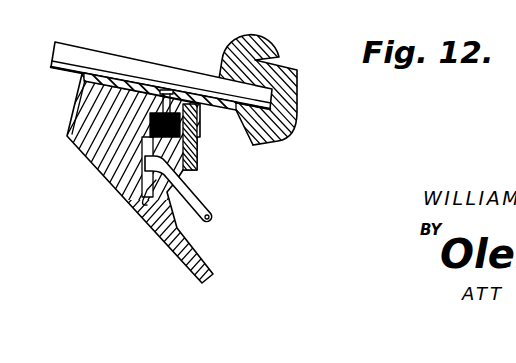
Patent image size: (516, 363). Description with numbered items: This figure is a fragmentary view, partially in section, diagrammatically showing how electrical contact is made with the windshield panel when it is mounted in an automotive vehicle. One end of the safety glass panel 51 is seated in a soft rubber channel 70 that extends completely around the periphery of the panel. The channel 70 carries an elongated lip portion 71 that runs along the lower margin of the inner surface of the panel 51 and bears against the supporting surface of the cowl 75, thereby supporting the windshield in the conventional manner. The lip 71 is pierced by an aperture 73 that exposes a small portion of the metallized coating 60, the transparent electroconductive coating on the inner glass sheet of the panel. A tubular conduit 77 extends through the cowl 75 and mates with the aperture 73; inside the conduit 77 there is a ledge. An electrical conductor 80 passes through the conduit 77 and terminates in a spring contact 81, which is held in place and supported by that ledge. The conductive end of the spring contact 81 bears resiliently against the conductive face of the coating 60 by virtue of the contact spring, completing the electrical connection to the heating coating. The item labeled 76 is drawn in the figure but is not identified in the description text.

The safety glass panel 51 is at (61, 42).
The metallized coating 60 is at (233, 128).
The soft rubber channel 70 is at (268, 48).
The elongated lip portion 71 is at (115, 82).
The aperture 73 is at (173, 112).
The cowl 75 is at (70, 148).
The pin 76 is at (140, 205).
The tubular conduit 77 is at (197, 167).
The electrical conductor 80 is at (213, 218).
The spring contact 81 is at (168, 100).